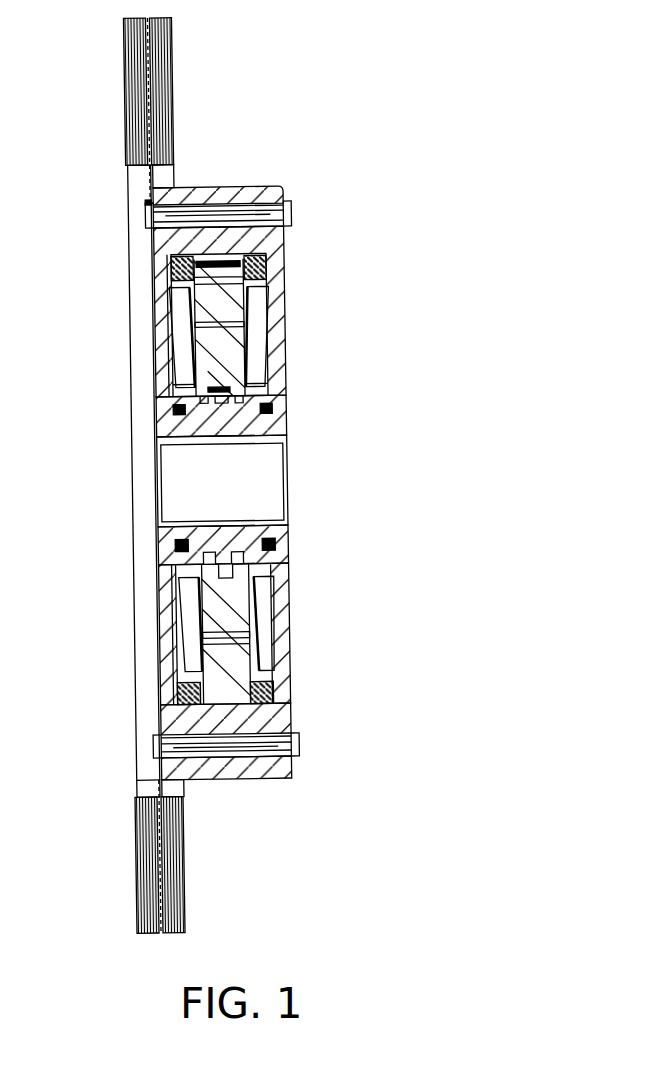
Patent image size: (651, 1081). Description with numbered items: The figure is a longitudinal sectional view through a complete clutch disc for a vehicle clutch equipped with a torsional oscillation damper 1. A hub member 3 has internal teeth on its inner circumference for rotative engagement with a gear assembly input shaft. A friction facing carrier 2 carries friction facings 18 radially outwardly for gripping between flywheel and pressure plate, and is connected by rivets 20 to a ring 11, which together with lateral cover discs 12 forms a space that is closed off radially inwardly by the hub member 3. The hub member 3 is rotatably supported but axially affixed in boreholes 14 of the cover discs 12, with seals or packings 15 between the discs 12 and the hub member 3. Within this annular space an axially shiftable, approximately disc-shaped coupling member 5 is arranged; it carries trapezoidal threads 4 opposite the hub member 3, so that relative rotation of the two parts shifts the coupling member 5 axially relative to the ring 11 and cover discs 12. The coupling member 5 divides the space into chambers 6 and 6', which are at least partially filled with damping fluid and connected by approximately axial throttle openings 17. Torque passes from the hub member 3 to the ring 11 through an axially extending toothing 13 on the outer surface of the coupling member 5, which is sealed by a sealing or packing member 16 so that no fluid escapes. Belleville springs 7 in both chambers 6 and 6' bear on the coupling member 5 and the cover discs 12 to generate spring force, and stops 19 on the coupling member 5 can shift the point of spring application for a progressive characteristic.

The torsional oscillation damper 1 is at (407, 292).
The friction facing carrier 2 is at (140, 178).
The hub member 3 is at (283, 427).
The trapezoidal threads 4 is at (220, 374).
The coupling member 5 is at (230, 600).
The chamber 6 is at (140, 393).
The chamber 6' is at (290, 394).
The spring 7 is at (185, 357).
The ring 11 is at (248, 195).
The cover discs 12 is at (168, 268).
The axially extending toothing 13 is at (216, 292).
The boreholes 14 is at (150, 549).
The seals or packings 15 is at (178, 556).
The sealing or packing member 16 is at (185, 687).
The throttle openings 17 is at (185, 618).
The friction facings 18 is at (132, 60).
The stops 19 is at (240, 658).
The rivets 20 is at (205, 207).